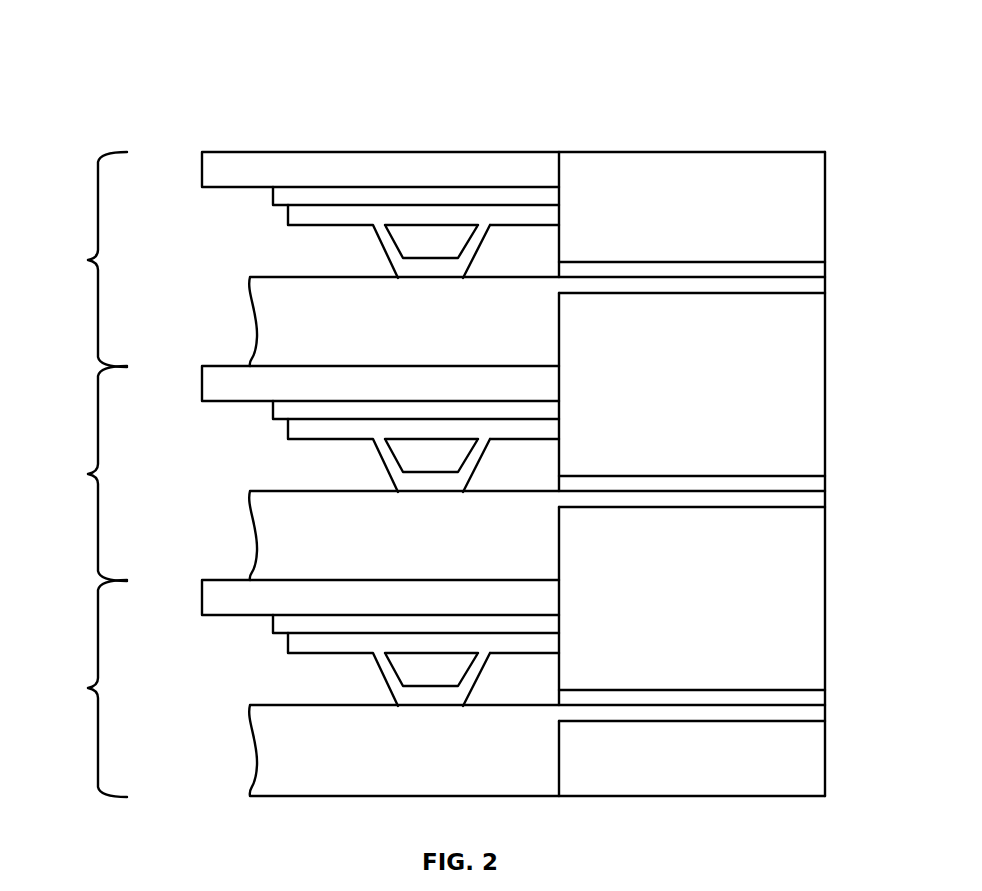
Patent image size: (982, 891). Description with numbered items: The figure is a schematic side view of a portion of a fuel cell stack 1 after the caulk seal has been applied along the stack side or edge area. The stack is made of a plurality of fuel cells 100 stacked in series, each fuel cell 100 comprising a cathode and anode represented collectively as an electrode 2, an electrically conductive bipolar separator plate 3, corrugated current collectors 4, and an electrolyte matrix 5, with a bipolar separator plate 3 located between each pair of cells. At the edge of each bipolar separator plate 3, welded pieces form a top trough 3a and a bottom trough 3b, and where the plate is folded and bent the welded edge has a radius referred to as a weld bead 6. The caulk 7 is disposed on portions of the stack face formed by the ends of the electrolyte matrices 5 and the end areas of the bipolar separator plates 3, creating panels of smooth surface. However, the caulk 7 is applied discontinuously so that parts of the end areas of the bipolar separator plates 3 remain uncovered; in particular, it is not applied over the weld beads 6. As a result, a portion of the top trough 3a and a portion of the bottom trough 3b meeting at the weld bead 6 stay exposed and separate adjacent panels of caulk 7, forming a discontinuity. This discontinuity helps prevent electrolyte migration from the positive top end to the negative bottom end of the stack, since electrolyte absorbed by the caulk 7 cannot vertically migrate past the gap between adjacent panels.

The fuel cell stack 1 is at (313, 55).
The fuel cell 100 is at (88, 260).
The electrolyte matrix 5 is at (207, 165).
The electrode 2 is at (279, 191).
The corrugated current collector 4 is at (306, 214).
The bipolar separator plate 3 is at (262, 316).
The top trough 3a is at (814, 271).
The bottom trough 3b is at (815, 288).
The weld bead 6 is at (829, 273).
The caulk 7 is at (805, 192).